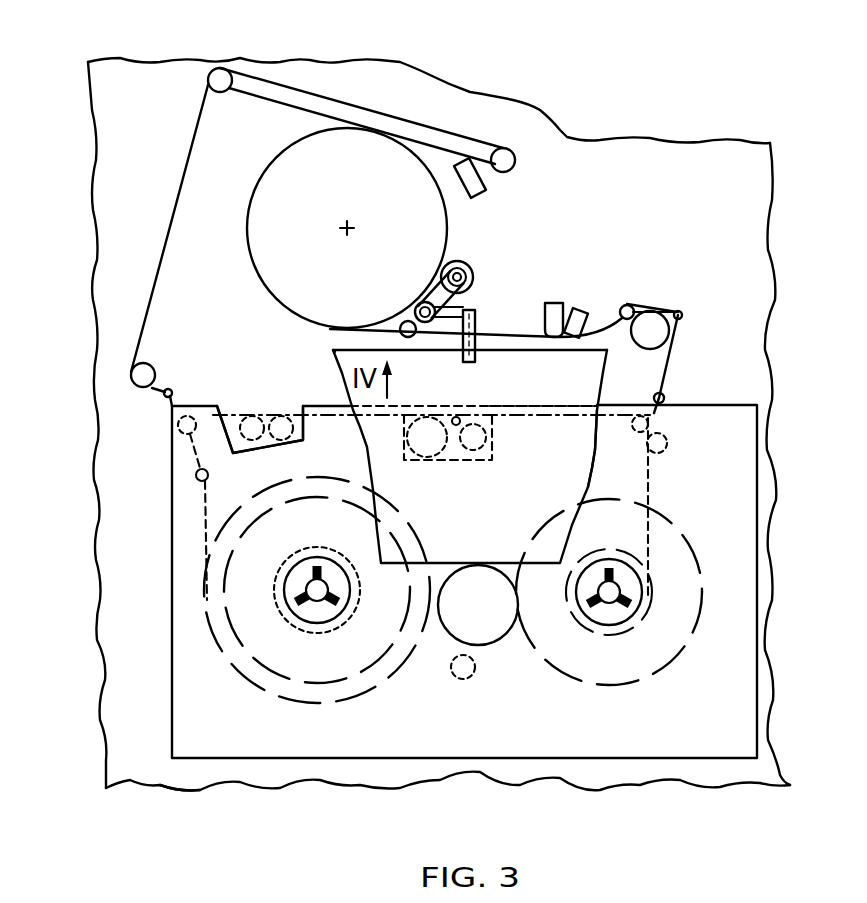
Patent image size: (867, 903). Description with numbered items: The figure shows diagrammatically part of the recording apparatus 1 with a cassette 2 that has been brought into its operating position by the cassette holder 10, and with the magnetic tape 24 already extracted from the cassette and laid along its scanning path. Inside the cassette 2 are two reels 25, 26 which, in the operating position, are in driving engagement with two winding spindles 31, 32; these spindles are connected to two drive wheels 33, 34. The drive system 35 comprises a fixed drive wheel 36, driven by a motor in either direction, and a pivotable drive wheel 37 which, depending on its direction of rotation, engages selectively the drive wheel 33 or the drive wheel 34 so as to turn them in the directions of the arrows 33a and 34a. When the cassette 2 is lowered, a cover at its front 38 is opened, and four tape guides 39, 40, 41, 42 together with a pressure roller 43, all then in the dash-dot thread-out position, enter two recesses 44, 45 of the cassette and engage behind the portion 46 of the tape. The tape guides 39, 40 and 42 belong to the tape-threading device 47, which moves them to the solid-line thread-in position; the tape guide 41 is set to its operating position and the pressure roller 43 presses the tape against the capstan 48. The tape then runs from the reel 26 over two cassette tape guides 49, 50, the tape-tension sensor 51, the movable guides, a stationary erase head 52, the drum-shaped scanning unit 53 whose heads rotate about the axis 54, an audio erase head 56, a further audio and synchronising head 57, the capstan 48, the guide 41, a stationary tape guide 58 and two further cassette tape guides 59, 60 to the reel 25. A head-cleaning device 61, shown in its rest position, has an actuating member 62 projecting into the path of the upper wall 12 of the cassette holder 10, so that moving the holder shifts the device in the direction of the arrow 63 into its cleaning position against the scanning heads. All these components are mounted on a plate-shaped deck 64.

The apparatus 1 is at (650, 134).
The cassette 2 is at (155, 653).
The cassette holder 10 is at (328, 355).
The upper wall 12 is at (592, 472).
The magnetic tape 24 is at (205, 513).
The reel 25 is at (600, 618).
The reel 26 is at (308, 617).
The winding spindle 31 is at (612, 598).
The winding spindle 32 is at (320, 596).
The drive wheel 33 is at (592, 690).
The arrow 33a is at (682, 560).
The drive wheel 34 is at (394, 684).
The arrow 34a is at (245, 616).
The drive system 35 is at (486, 686).
The fixed drive wheel 36 is at (459, 680).
The pivotable drive wheel 37 is at (488, 562).
The front 38 is at (543, 405).
The tape guide 39 is at (138, 366).
The tape guide 40 is at (512, 163).
The tape guide 41 is at (681, 311).
The tape guide 42 is at (207, 78).
The pressure roller 43 is at (643, 335).
The recess 44 is at (236, 403).
The recess 45 is at (474, 460).
The portion of the magnetic tape 46 is at (463, 456).
The tape-threading device 47 is at (218, 67).
The capstan 48 is at (633, 306).
The tape guide 49 is at (195, 477).
The tape guide 50 is at (172, 432).
The tape-tension sensor 51 is at (164, 392).
The stationary magnetic head 52 is at (482, 186).
The drum-shaped scanning unit 53 is at (235, 221).
The axis 54 is at (353, 226).
The stationary magnetic head 56 is at (553, 304).
The stationary magnetic head 57 is at (583, 312).
The stationary tape guide 58 is at (665, 395).
The tape guide 59 is at (626, 508).
The tape guide 60 is at (668, 440).
The head-cleaning device 61 is at (482, 276).
The actuating member 62 is at (487, 325).
The arrow 63 is at (466, 252).
The deck 64 is at (186, 790).